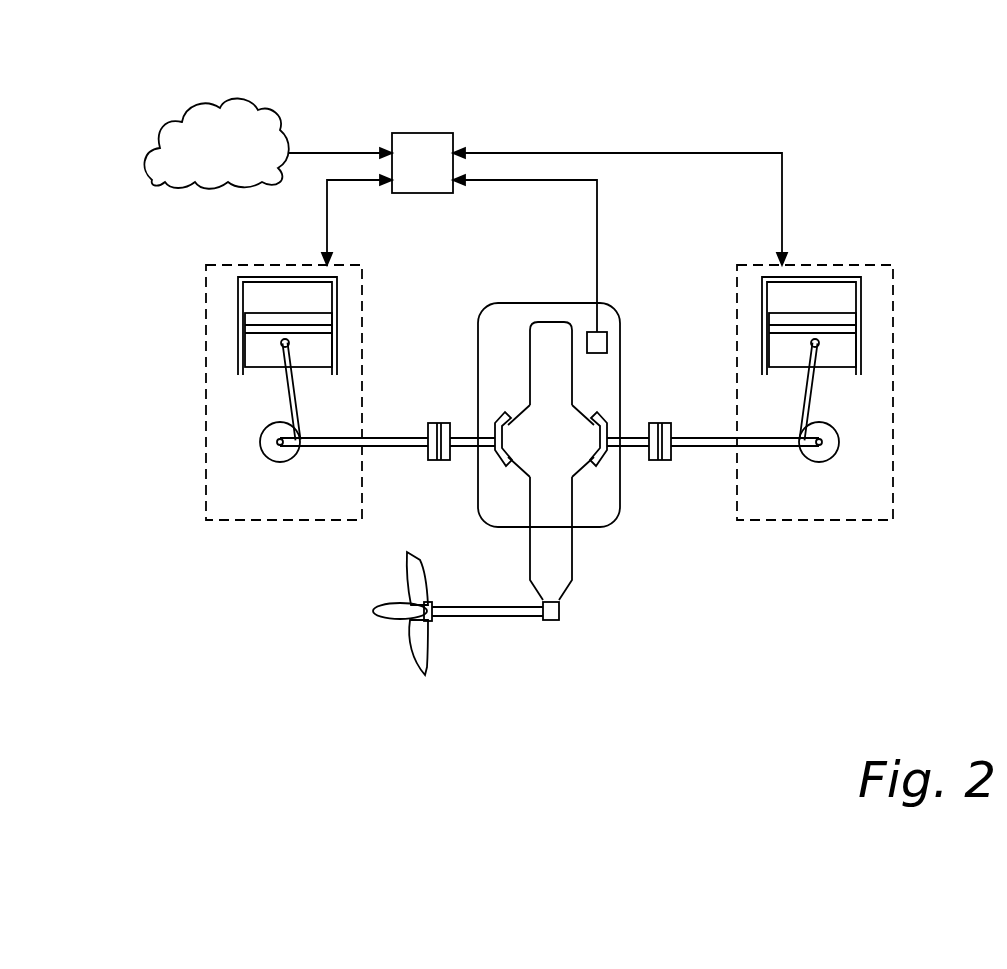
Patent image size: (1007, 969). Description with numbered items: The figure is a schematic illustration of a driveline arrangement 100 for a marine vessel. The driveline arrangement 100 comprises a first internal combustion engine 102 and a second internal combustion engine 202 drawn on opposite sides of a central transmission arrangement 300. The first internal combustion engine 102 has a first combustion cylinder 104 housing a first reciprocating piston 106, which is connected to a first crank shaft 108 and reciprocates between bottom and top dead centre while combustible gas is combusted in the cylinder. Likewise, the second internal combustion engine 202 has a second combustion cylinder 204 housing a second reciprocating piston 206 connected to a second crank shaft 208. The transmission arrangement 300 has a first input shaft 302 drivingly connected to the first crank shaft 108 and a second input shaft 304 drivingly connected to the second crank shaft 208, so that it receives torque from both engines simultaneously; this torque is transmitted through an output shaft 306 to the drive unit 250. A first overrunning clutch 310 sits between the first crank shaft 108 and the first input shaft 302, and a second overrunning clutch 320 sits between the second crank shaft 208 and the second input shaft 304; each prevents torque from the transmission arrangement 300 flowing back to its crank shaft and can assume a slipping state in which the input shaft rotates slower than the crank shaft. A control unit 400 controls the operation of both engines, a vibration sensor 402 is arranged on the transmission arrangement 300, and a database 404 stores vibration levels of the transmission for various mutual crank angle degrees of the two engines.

The driveline arrangement 100 is at (786, 98).
The first internal combustion engine 102 is at (206, 437).
The first combustion cylinder 104 is at (238, 301).
The first reciprocating piston 106 is at (313, 348).
The first crank shaft 108 is at (322, 446).
The second internal combustion engine 202 is at (893, 392).
The second combustion cylinder 204 is at (861, 300).
The second reciprocating piston 206 is at (845, 352).
The second crank shaft 208 is at (763, 446).
The drive unit 250 is at (415, 695).
The transmission arrangement 300 is at (625, 540).
The first input shaft 302 is at (467, 437).
The second input shaft 304 is at (628, 437).
The output shaft 306 is at (559, 612).
The first overrunning clutch 310 is at (432, 475).
The second overrunning clutch 320 is at (665, 475).
The control unit 400 is at (420, 133).
The vibration sensor 402 is at (607, 342).
The database 404 is at (238, 101).